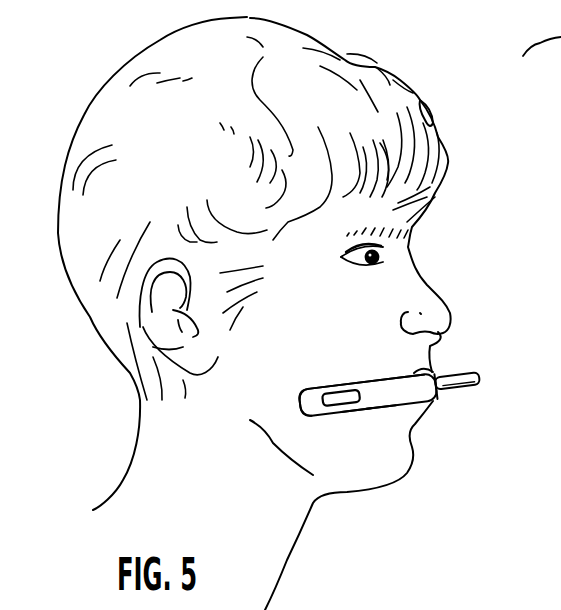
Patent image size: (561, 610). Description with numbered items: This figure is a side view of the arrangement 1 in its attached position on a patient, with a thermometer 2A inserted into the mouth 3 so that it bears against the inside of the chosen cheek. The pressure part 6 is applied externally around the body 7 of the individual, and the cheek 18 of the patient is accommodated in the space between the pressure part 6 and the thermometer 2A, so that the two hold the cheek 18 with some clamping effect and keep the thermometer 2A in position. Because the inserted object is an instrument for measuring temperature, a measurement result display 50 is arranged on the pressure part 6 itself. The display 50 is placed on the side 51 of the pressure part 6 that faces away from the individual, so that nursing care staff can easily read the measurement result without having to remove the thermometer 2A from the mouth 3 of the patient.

The arrangement 1 is at (440, 405).
The thermometer 2A is at (481, 380).
The mouth 3 is at (437, 369).
The pressure part 6 is at (383, 379).
The body 7 is at (353, 421).
The cheek 18 is at (364, 418).
The measurement result display 50 is at (336, 394).
The side of the pressure part 51 is at (300, 401).